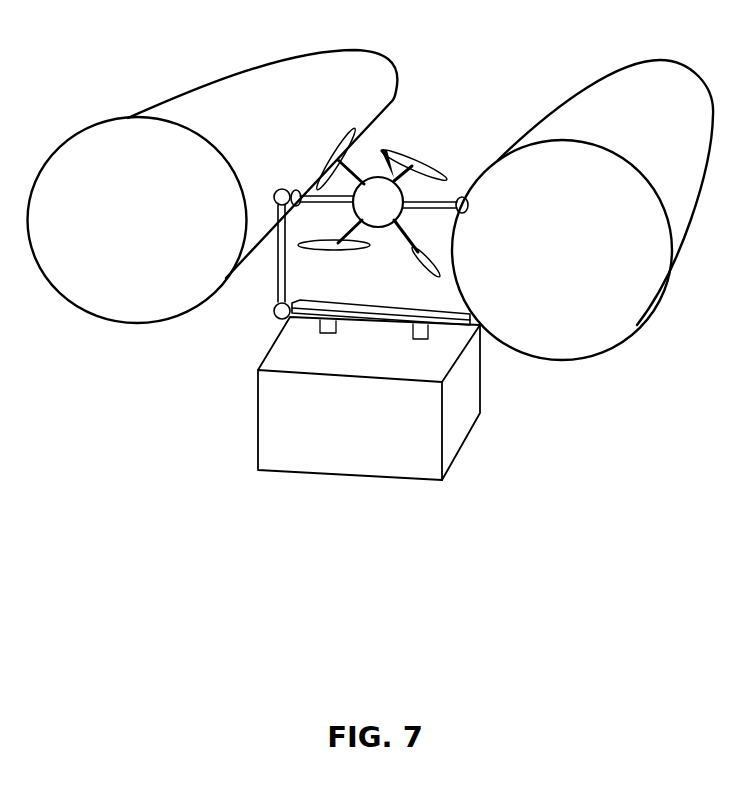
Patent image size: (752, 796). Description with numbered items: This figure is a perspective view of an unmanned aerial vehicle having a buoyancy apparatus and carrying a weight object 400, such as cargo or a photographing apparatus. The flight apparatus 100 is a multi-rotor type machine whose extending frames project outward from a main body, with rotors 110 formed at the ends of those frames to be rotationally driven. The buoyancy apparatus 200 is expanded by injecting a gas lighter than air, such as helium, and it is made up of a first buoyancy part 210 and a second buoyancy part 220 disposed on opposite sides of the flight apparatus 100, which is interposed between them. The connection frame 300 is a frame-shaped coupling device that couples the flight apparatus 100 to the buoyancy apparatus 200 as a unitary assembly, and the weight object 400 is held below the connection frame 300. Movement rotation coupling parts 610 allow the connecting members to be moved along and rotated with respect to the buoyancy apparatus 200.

The flight apparatus 100 is at (392, 173).
The rotors 110 is at (438, 163).
The buoyancy apparatus 200 is at (371, 332).
The first buoyancy part 210 is at (167, 288).
The second buoyancy part 220 is at (605, 322).
The connection frame 300 is at (455, 338).
The weight object 400 is at (345, 468).
The movement rotation coupling parts 610 is at (298, 193).